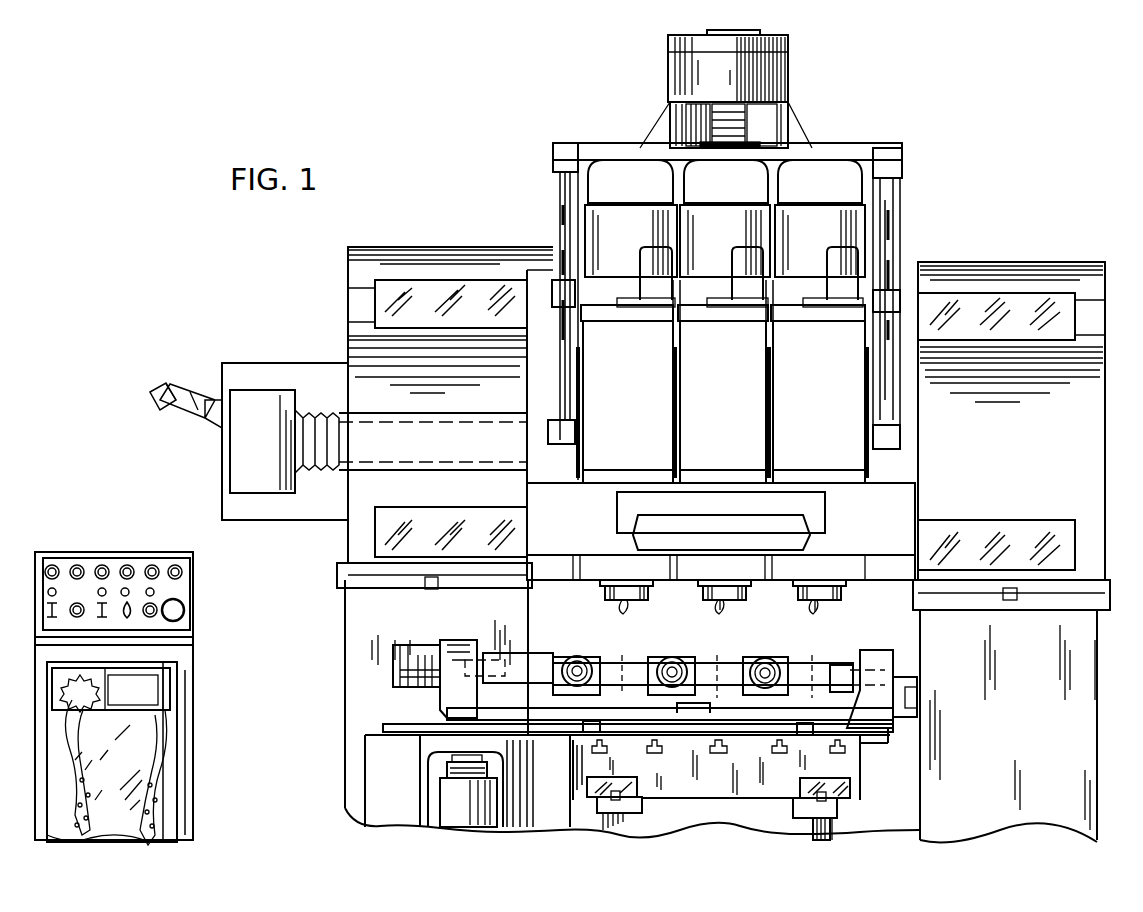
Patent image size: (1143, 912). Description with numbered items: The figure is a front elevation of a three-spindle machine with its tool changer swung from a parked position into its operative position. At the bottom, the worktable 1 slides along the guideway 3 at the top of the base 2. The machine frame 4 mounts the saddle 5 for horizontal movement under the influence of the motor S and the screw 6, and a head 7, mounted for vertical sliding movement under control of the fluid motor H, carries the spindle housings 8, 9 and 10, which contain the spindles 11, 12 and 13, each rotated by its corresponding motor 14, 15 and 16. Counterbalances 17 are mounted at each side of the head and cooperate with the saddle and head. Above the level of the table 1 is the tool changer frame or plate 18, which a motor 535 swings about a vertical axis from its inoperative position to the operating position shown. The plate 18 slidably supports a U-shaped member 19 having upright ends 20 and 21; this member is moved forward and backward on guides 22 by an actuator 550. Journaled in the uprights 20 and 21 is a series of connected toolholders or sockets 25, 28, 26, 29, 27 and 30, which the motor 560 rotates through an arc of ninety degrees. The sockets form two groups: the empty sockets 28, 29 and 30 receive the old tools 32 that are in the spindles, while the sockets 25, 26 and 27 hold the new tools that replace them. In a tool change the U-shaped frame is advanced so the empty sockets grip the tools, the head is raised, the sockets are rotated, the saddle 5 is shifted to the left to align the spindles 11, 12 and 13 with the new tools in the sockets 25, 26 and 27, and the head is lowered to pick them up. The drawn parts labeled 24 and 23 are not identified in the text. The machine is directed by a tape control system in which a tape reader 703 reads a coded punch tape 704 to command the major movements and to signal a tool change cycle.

The fluid motor H is at (690, 28).
The head 7 is at (862, 160).
The motor 14 is at (631, 230).
The motor 15 is at (725, 230).
The motor 16 is at (820, 230).
The counterbalances 17 is at (555, 292).
The saddle 5 is at (897, 308).
The machine frame 4 is at (358, 355).
The motor S is at (262, 456).
The screw 6 is at (318, 478).
The spindle housing 8 is at (629, 381).
The spindle housing 9 is at (725, 381).
The spindle housing 10 is at (819, 390).
The spindle 11 is at (632, 602).
The spindle 12 is at (732, 602).
The spindle 13 is at (832, 602).
The old tools 32 is at (718, 610).
The upright end 20 is at (478, 645).
The motor 560 is at (422, 680).
The coupling block 24 is at (510, 668).
The socket 25 is at (608, 668).
The socket 26 is at (708, 668).
The socket 27 is at (800, 668).
The socket 28 is at (622, 660).
The socket 29 is at (718, 662).
The socket 30 is at (813, 662).
The end support 23 is at (875, 650).
The upright end 21 is at (880, 675).
The U-shaped member 19 is at (640, 715).
The actuator 550 is at (698, 712).
The guides 22 is at (583, 725).
The tool changer frame or plate 18 is at (550, 733).
The worktable 1 is at (840, 765).
The motor 535 is at (450, 790).
The guideway 3 is at (793, 805).
The base 2 is at (838, 824).
The tape reader 703 is at (165, 670).
The coded punch tape 704 is at (165, 812).